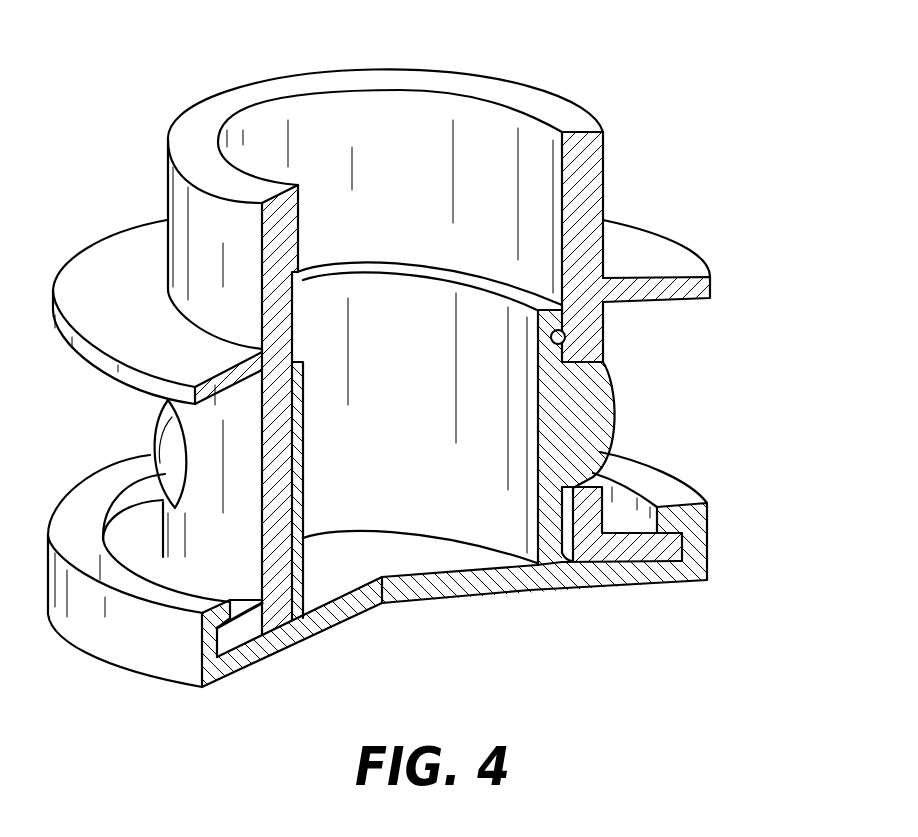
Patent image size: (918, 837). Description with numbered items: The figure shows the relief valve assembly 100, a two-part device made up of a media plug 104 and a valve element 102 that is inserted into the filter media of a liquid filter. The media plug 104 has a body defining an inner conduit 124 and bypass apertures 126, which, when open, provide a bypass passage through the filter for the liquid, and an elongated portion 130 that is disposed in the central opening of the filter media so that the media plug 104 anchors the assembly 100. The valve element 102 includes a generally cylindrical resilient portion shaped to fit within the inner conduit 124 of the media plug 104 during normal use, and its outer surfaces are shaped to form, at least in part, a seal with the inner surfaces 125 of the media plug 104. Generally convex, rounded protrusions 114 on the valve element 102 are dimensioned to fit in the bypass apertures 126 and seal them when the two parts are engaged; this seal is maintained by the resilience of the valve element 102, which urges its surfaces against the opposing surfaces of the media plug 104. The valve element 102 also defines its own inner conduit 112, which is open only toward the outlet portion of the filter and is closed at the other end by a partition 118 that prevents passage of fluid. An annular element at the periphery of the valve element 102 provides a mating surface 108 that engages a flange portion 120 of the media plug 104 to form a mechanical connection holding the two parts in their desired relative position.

The relief valve assembly 100 is at (714, 213).
The valve element 102 is at (194, 672).
The media plug 104 is at (103, 270).
The mating surface 108 is at (667, 503).
The inner conduit 112 is at (450, 510).
The protrusions 114 is at (593, 422).
The partition 118 is at (333, 587).
The flange portion 120 is at (650, 553).
The inner conduit 124 is at (472, 212).
The inner surfaces 125 is at (565, 346).
The bypass apertures 126 is at (603, 362).
The elongated portion 130 is at (603, 132).